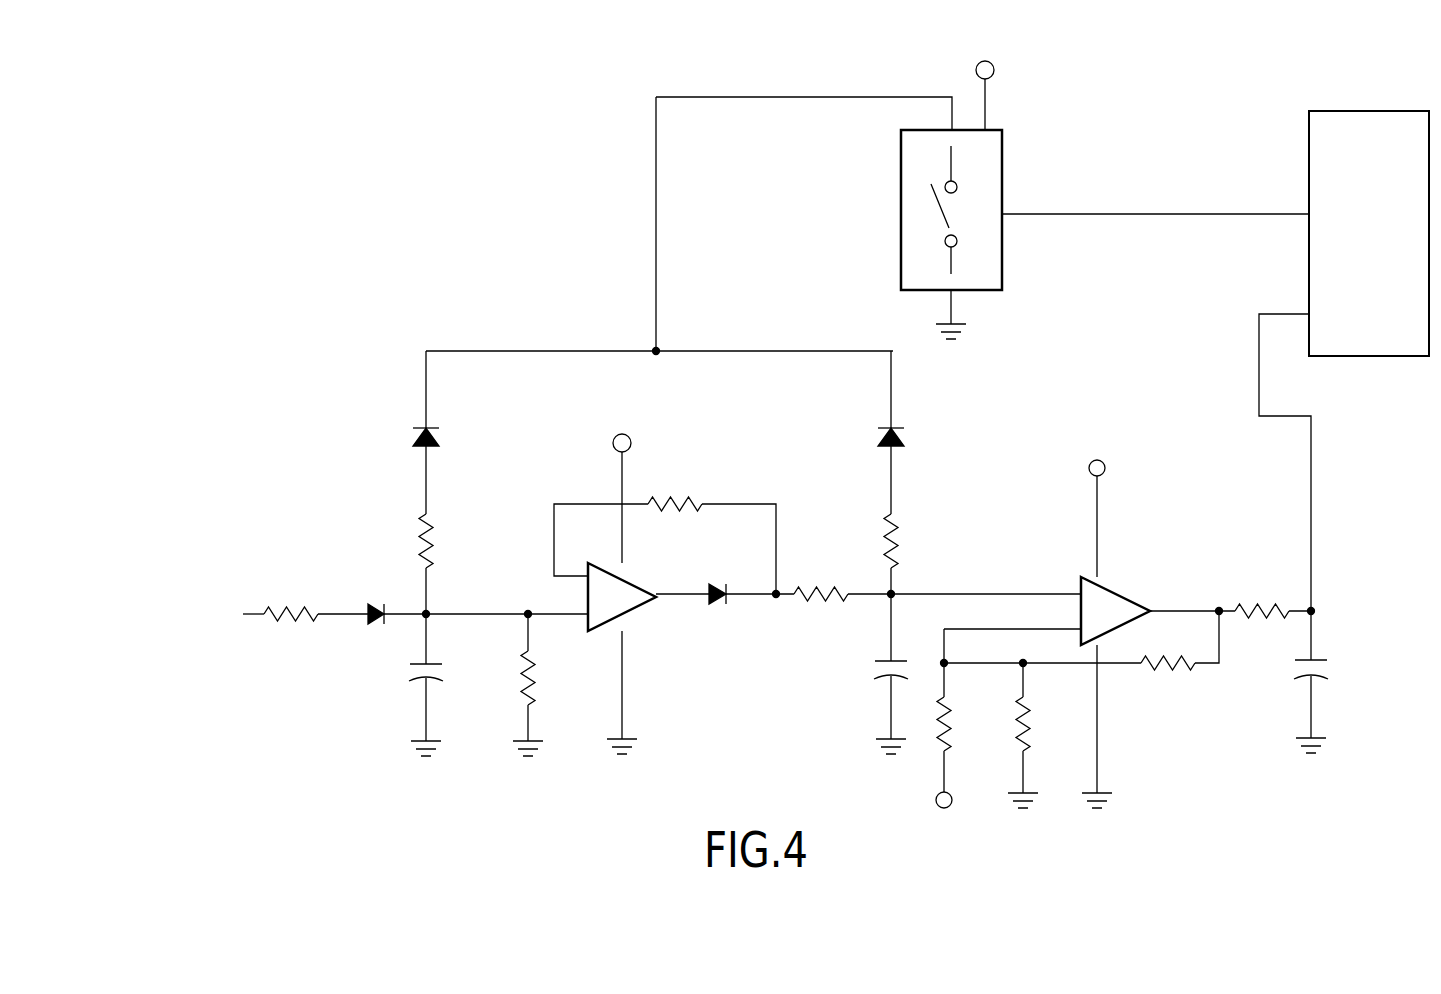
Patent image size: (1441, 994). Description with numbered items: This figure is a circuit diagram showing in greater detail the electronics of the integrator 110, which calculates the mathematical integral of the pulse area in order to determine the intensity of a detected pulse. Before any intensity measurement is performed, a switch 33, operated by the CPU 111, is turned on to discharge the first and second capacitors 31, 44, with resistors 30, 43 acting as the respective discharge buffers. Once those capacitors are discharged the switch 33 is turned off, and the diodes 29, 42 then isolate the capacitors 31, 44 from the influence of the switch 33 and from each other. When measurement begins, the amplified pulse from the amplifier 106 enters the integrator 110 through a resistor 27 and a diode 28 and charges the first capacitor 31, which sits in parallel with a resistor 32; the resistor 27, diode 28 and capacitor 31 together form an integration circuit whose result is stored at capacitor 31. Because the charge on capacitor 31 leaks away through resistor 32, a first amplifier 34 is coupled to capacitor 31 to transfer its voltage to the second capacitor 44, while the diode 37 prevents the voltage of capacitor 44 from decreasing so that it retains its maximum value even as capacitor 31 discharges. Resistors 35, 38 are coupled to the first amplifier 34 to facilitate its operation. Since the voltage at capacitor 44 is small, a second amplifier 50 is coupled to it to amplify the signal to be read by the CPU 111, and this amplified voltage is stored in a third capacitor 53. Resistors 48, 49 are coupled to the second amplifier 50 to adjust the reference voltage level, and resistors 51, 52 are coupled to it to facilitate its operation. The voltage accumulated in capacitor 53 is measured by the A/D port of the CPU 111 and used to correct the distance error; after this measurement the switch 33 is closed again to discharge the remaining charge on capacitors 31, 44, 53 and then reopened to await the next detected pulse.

The resistor 27 is at (316, 594).
The diode 28 is at (395, 592).
The diode 29 is at (447, 438).
The resistor 30 is at (447, 541).
The first capacitor 31 is at (443, 709).
The resistor 32 is at (545, 685).
The switch 33 is at (1001, 163).
The first amplifier 34 is at (637, 607).
The resistor 35 is at (667, 528).
The diode 37 is at (739, 573).
The resistor 38 is at (835, 576).
The diode 42 is at (912, 437).
The resistor 43 is at (912, 541).
The second capacitor 44 is at (873, 705).
The resistor 48 is at (952, 771).
The resistor 49 is at (1038, 735).
The second amplifier 50 is at (1119, 593).
The resistor 51 is at (1082, 658).
The resistor 52 is at (1267, 591).
The third capacitor 53 is at (1330, 682).
The amplifier 106 is at (196, 618).
The integrator 110 is at (222, 436).
The CPU 111 is at (1308, 145).